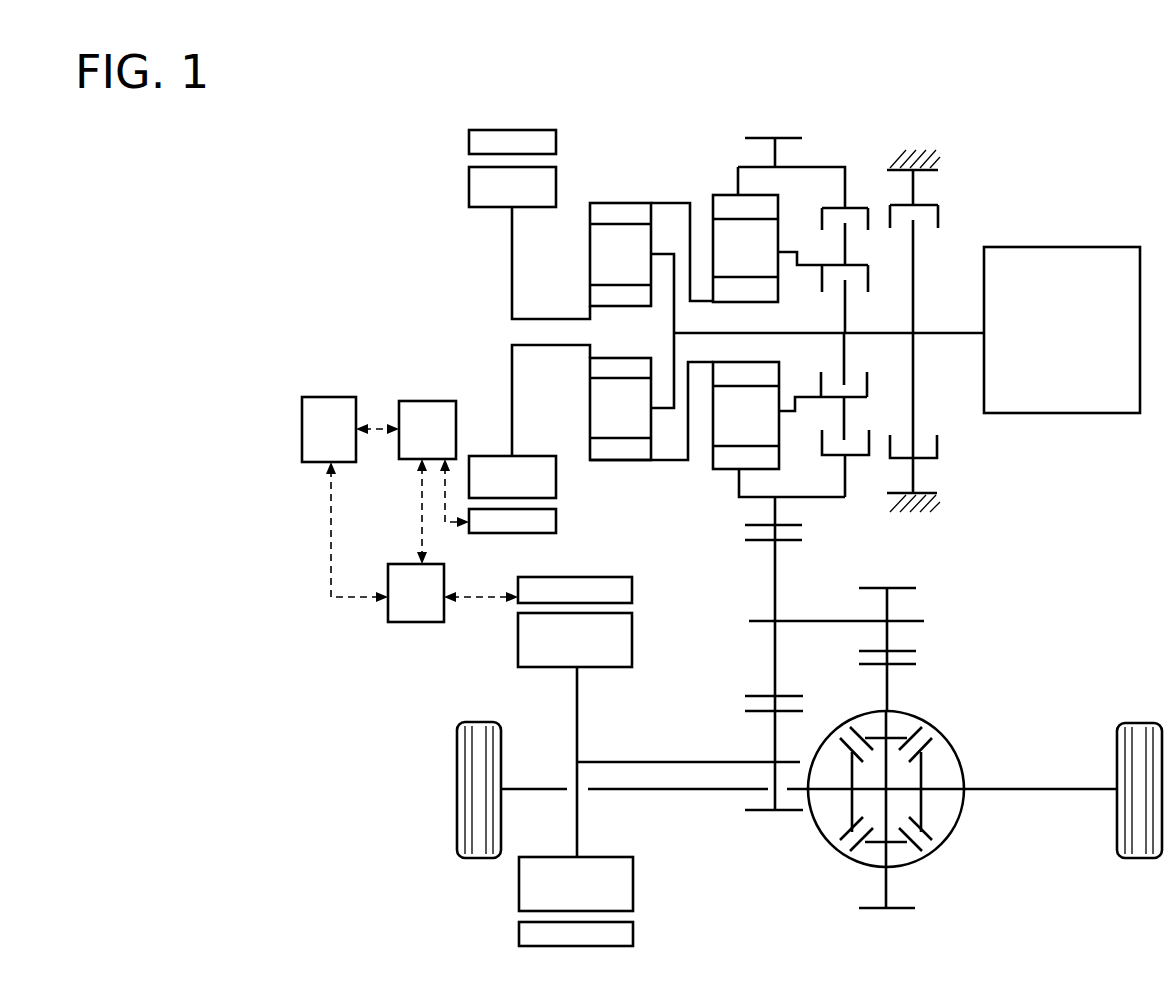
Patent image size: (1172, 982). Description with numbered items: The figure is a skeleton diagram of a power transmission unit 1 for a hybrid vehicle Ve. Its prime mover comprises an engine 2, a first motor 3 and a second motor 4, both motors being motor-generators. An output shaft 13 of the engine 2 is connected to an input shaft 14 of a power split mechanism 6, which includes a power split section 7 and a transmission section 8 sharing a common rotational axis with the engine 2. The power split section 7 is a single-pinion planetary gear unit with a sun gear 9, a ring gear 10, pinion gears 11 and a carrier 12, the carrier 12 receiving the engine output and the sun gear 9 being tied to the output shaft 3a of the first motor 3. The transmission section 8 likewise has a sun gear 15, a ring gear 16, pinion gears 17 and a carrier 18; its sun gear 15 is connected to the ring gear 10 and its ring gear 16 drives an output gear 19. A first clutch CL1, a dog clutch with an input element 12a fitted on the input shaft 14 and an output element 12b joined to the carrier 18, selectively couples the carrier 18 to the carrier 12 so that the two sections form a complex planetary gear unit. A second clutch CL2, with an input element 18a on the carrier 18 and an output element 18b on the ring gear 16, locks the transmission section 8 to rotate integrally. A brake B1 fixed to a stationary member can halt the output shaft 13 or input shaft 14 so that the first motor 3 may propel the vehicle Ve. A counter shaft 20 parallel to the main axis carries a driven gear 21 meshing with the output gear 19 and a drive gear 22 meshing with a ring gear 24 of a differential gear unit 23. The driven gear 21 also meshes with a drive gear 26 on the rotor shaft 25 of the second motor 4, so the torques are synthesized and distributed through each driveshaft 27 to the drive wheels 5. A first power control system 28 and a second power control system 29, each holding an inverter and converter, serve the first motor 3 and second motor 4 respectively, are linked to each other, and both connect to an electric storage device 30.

The hybrid vehicle Ve is at (1003, 91).
The power transmission unit 1 is at (382, 203).
The engine 2 is at (1068, 416).
The first motor 3 is at (455, 181).
The output shaft of the first motor 3a is at (551, 318).
The second motor 4 is at (487, 904).
The drive wheels 5 is at (455, 782).
The power split mechanism 6 is at (722, 118).
The power split section 7 is at (627, 179).
The transmission section 8 is at (722, 172).
The sun gear 9 is at (597, 372).
The ring gear 10 is at (630, 462).
The pinion gears 11 is at (597, 434).
The carrier 12 is at (674, 320).
The input element 12a is at (845, 350).
The output element 12b is at (845, 244).
The output shaft 13 is at (946, 330).
The input shaft 14 is at (883, 330).
The sun gear 15 is at (754, 293).
The ring gear 16 is at (769, 204).
The pinion gears 17 is at (723, 253).
The carrier 18 is at (808, 262).
The input element 18a is at (845, 245).
The output element 18b is at (832, 457).
The output gear 19 is at (745, 525).
The counter shaft 20 is at (920, 620).
The driven gear 21 is at (752, 541).
The drive gear 22 is at (903, 588).
The differential gear unit 23 is at (965, 743).
The ring gear 24 is at (918, 662).
The rotor shaft 25 is at (660, 760).
The drive gear 26 is at (752, 712).
The driveshaft 27 is at (692, 793).
The first power control system 28 is at (442, 400).
The second power control system 29 is at (412, 623).
The electric storage device 30 is at (317, 463).
The first clutch CL1 is at (875, 384).
The second clutch CL2 is at (833, 196).
The brake B1 is at (944, 206).